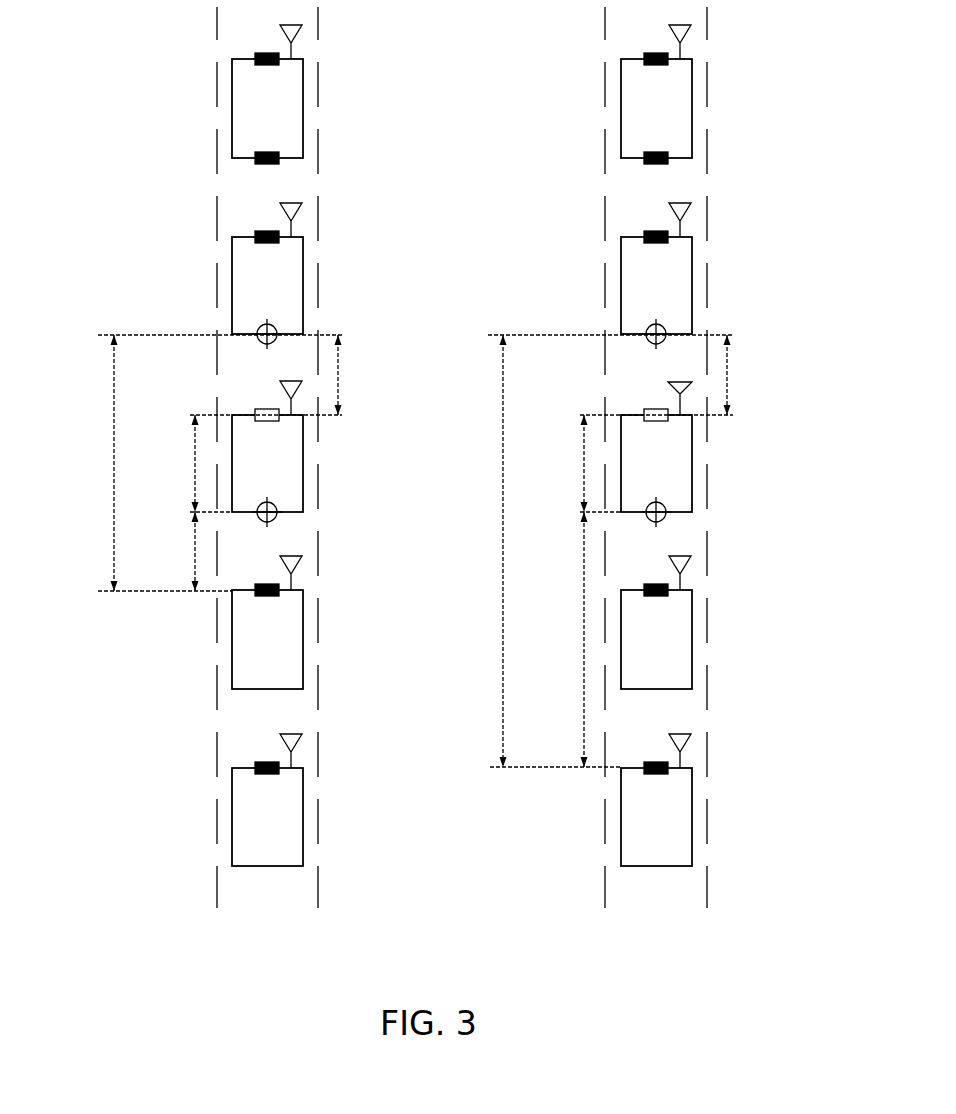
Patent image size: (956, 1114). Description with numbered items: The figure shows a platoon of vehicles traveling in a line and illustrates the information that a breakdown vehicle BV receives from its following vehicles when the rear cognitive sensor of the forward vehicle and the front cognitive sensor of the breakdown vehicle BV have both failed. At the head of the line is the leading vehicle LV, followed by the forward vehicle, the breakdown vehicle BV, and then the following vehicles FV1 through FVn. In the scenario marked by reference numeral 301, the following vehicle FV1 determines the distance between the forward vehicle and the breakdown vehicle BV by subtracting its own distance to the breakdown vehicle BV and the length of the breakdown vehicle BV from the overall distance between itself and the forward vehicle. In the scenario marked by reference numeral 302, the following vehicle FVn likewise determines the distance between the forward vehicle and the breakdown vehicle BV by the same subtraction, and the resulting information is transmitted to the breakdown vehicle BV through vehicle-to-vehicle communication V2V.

The first following vehicle determination scenario 301 is at (240, 480).
The n-th following vehicle determination scenario 302 is at (629, 480).
The leading vehicle LV is at (267, 94).
The breakdown vehicle BV is at (267, 454).
The following vehicle FV1 is at (267, 622).
The following vehicle FVn is at (267, 800).
The vehicle-to-vehicle communication V2V is at (680, 386).